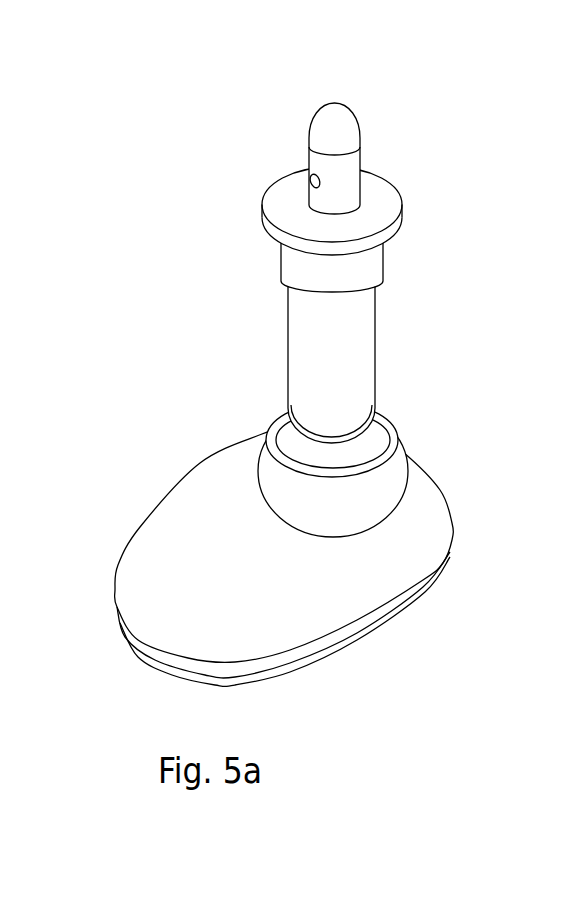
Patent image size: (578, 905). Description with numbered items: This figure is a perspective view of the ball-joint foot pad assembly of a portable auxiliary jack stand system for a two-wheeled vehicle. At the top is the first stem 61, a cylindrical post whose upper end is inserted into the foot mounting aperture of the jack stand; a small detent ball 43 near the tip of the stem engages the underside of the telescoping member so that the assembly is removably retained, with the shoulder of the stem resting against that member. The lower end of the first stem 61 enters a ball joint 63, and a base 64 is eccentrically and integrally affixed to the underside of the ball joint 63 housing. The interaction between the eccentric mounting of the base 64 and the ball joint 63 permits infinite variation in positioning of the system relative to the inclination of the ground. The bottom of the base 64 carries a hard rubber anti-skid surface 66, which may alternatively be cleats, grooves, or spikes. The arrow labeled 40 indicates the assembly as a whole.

The support foot assembly 40 is at (100, 166).
The detent ball 43 is at (312, 177).
The first stem 61 is at (397, 225).
The ball joint 63 is at (272, 463).
The base 64 is at (155, 556).
The hard rubber anti-skid surface 66 is at (405, 622).